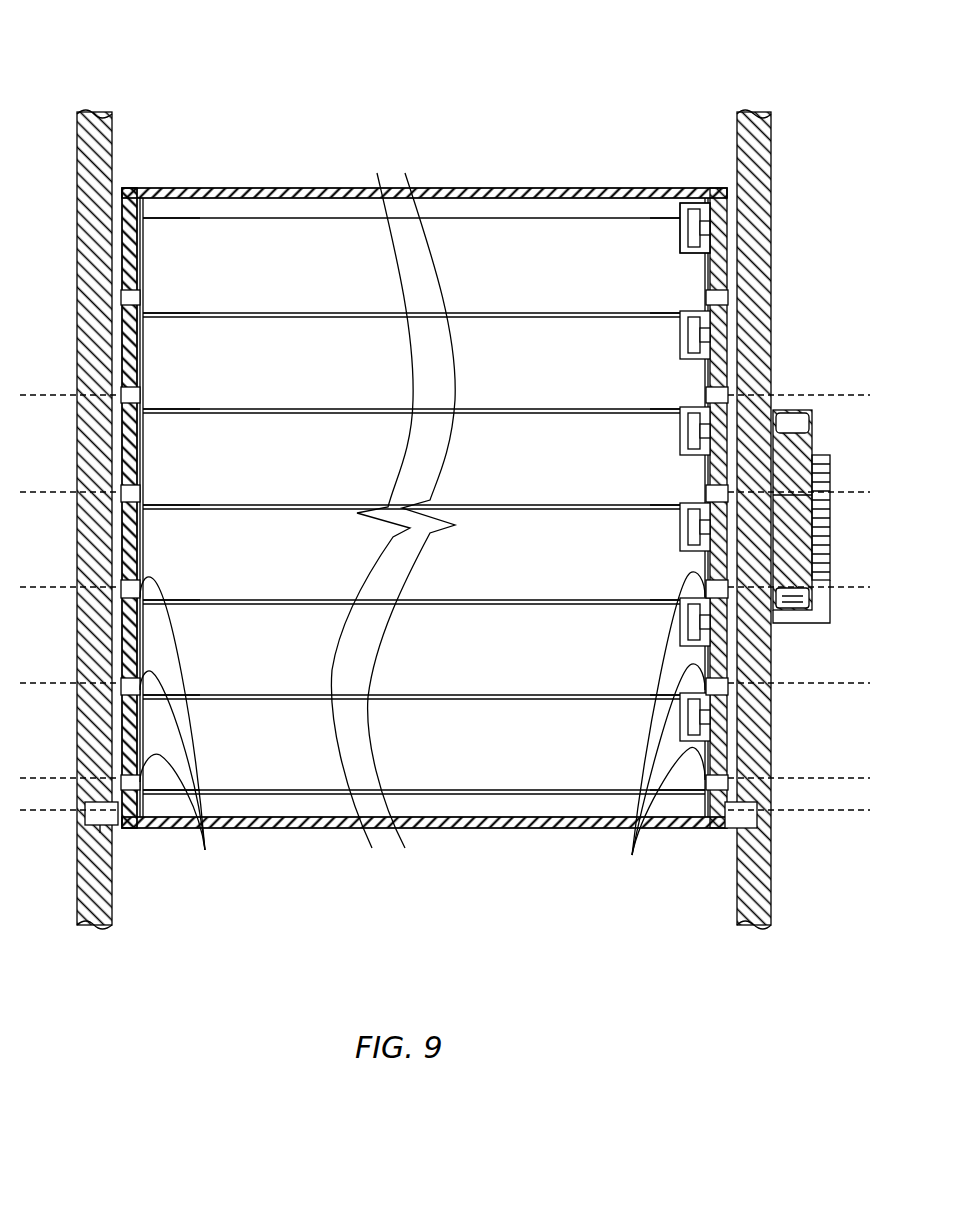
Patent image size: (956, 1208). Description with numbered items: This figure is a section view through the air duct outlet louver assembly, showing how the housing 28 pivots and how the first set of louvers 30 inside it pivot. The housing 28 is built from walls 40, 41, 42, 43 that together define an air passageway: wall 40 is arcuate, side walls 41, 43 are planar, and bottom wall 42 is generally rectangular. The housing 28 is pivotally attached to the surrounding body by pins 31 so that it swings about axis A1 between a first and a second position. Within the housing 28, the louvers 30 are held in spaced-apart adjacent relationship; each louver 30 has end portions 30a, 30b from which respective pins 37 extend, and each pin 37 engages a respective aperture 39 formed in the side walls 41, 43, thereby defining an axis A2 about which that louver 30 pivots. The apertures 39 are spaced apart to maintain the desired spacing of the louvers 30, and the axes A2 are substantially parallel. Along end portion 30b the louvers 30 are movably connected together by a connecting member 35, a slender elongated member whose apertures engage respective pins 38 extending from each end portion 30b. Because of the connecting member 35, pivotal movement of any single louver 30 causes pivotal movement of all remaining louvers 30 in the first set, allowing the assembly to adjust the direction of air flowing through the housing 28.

The housing 28 is at (511, 186).
The first set of louvers 30 is at (332, 455).
The end portion of louver 30a is at (196, 357).
The end portion of louver 30b is at (607, 440).
The pins 31 is at (103, 833).
The connecting member 35 is at (690, 207).
The pins 37 is at (122, 297).
The pins 38 is at (712, 332).
The apertures 39 is at (422, 729).
The wall 40 is at (456, 192).
The side wall 41 is at (782, 410).
The bottom wall 42 is at (458, 829).
The side wall 43 is at (124, 345).
The axis A1 is at (814, 812).
The axes A2 is at (826, 777).